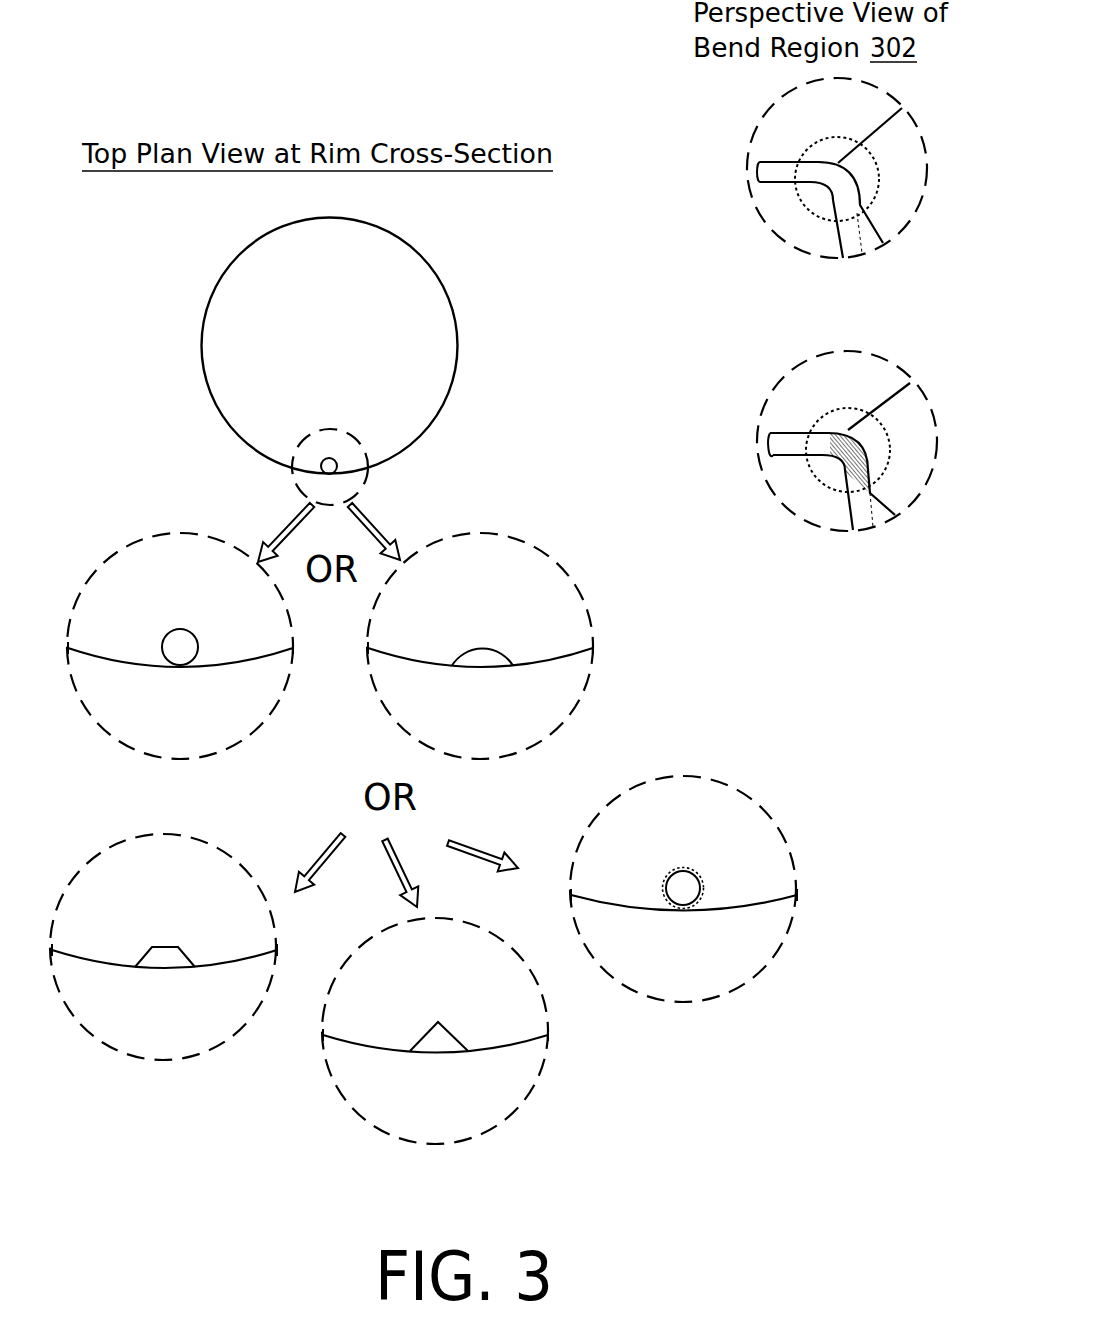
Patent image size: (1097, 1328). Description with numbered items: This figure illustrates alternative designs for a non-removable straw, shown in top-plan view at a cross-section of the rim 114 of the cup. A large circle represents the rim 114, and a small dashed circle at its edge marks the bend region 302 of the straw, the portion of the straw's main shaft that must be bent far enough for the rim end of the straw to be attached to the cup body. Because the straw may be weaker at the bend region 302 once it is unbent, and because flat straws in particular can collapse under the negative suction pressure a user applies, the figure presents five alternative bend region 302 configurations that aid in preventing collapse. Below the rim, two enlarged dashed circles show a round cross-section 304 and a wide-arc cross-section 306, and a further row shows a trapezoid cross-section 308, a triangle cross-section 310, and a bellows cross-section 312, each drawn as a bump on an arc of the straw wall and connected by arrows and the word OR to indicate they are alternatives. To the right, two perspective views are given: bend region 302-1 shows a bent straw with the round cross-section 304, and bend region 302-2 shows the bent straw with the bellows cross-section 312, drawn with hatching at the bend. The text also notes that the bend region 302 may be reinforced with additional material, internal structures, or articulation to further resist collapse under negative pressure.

The rim 114 is at (508, 253).
The bend region 302 is at (405, 428).
The round cross-section 304 is at (245, 633).
The wide-arc cross-section 306 is at (540, 642).
The trapezoid cross-section 308 is at (233, 1000).
The triangle cross-section 310 is at (487, 1082).
The bellows cross-section 312 is at (732, 945).
The bend region 302-1 is at (862, 300).
The bend region 302-2 is at (917, 584).